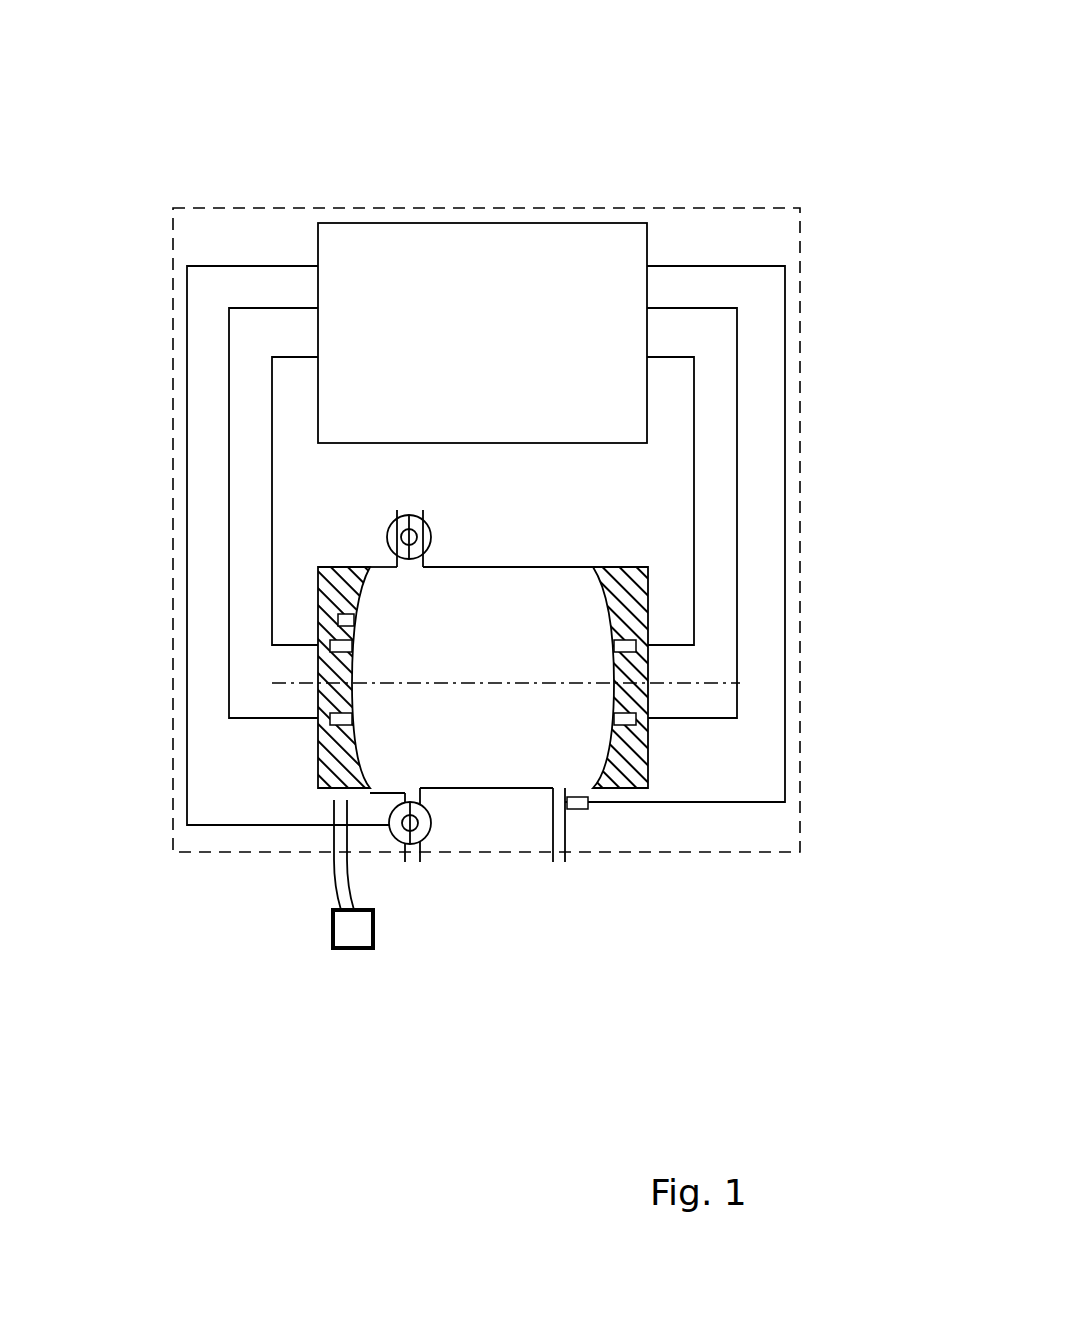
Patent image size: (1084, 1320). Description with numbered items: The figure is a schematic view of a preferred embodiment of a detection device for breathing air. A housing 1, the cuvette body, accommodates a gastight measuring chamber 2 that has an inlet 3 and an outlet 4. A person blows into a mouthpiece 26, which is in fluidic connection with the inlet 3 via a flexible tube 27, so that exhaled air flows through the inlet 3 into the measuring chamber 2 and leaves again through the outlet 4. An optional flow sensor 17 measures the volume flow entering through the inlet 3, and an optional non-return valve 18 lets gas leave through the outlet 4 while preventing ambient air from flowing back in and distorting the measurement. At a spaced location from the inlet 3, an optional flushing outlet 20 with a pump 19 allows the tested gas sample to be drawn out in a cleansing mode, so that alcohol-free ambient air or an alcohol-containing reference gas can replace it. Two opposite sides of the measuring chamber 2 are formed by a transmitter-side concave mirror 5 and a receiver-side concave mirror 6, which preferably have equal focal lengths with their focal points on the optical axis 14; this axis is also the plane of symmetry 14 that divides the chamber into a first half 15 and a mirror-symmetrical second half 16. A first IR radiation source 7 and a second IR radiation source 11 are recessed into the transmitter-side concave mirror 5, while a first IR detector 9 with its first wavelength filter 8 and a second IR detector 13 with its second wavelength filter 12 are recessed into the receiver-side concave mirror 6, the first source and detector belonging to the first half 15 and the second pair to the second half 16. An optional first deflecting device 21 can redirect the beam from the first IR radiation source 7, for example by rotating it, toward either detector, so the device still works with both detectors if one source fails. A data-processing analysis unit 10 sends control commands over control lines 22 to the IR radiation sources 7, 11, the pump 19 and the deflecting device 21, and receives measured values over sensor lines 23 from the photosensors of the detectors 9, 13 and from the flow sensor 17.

The housing 1 is at (285, 204).
The measuring chamber 2 is at (483, 795).
The inlet 3 is at (553, 862).
The outlet 4 is at (370, 565).
The transmitter-side concave mirror 5 is at (318, 763).
The receiver-side concave mirror 6 is at (650, 763).
The first IR radiation source 7 is at (330, 646).
The first wavelength filter 8 is at (612, 630).
The first IR detector 9 is at (648, 642).
The analysis unit 10 is at (625, 337).
The second IR radiation source 11 is at (330, 720).
The second wavelength filter 12 is at (612, 722).
The second IR detector 13 is at (705, 718).
The plane of symmetry and optical axis 14 is at (655, 682).
The first half of the measuring chamber 15 is at (447, 600).
The second half of the measuring chamber 16 is at (512, 708).
The flow sensor 17 is at (580, 812).
The non-return valve 18 is at (387, 535).
The pump 19 is at (390, 826).
The flushing outlet 20 is at (400, 795).
The first deflecting device 21 is at (338, 622).
The control lines 22 is at (188, 305).
The sensor lines 23 is at (694, 450).
The mouthpiece 26 is at (358, 950).
The flexible tube 27 is at (343, 888).